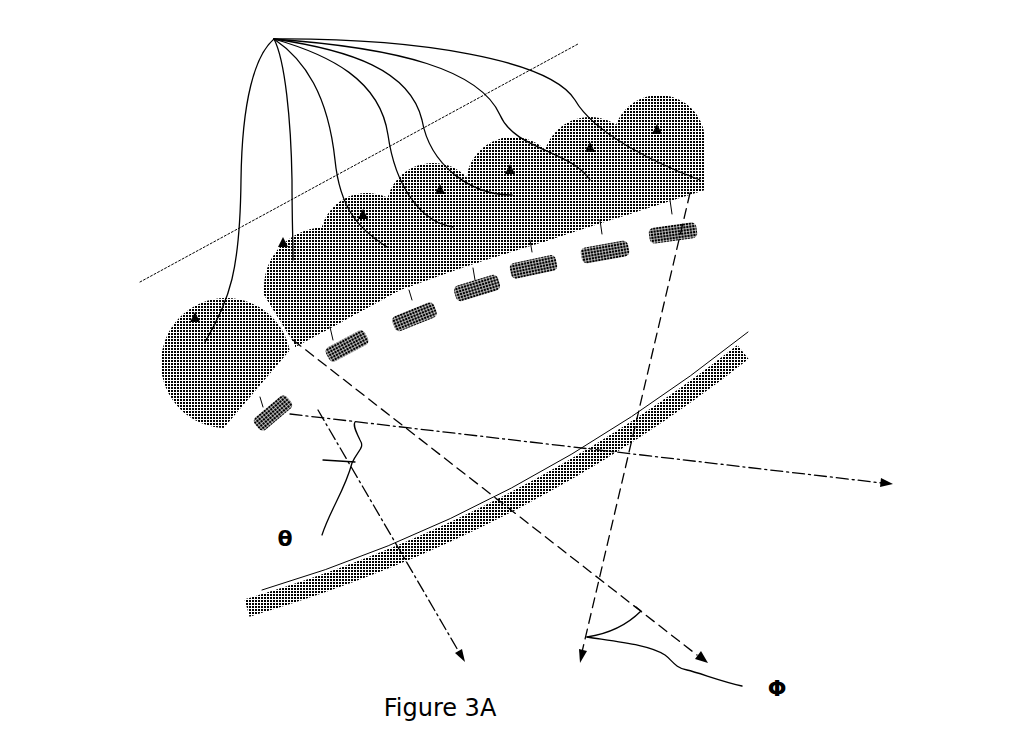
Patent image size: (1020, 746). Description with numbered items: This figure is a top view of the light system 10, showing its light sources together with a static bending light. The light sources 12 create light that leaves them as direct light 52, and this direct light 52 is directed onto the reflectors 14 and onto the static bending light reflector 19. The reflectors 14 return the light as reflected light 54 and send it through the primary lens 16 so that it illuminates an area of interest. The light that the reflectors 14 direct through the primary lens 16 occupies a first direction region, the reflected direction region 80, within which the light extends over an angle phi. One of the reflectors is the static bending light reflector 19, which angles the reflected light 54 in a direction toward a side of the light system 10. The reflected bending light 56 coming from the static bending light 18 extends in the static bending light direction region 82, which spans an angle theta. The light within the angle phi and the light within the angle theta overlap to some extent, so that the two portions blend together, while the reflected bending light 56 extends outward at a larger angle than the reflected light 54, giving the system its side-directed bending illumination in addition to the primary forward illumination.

The light system 10 is at (770, 87).
The light sources 12 is at (505, 277).
The reflectors 14 is at (677, 100).
The primary lens 16 is at (243, 589).
The static bending light 18 is at (213, 432).
The static bending light reflector 19 is at (205, 371).
The direct light 52 is at (445, 177).
The reflected light 54 is at (378, 403).
The reflected bending light 56 is at (765, 465).
The reflected direction region 80 is at (677, 592).
The static bending light direction region 82 is at (278, 483).